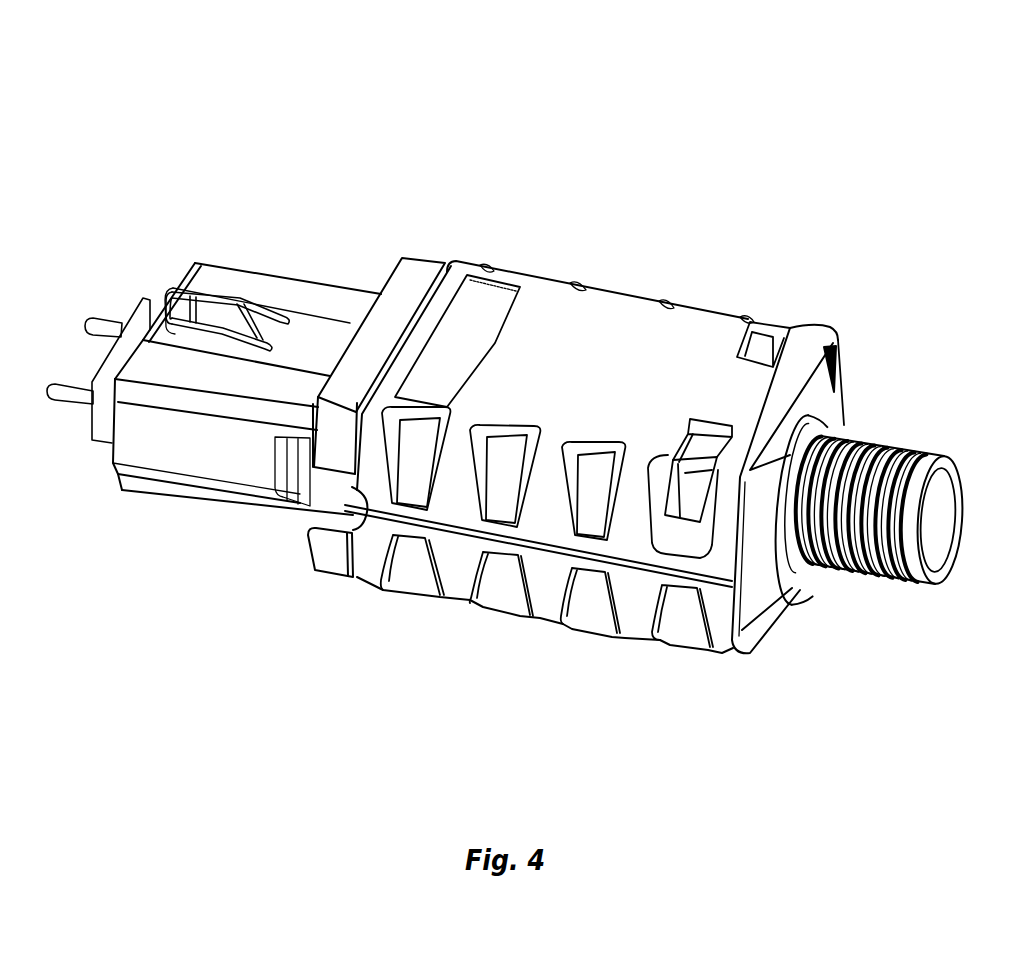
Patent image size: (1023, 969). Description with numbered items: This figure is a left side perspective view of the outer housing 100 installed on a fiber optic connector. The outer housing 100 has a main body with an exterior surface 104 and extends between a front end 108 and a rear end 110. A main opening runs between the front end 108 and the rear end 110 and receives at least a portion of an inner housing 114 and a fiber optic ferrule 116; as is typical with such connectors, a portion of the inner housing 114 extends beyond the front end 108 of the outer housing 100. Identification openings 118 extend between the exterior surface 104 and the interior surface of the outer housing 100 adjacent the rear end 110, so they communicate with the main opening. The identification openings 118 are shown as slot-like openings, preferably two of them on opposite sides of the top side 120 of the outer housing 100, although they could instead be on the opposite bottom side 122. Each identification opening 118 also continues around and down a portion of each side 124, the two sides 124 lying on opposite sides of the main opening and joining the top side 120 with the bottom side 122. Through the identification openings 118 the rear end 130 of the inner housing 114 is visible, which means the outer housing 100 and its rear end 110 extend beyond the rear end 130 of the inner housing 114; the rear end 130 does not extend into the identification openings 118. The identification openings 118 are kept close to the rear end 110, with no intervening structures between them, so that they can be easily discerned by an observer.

The outer housing 100 is at (643, 125).
The exterior surface 104 is at (637, 320).
The front end 108 is at (420, 260).
The rear end 110 is at (834, 350).
The inner housing 114 is at (250, 272).
The fiber optic ferrule 116 is at (140, 308).
The identification openings 118 is at (687, 420).
The top side 120 is at (549, 297).
The bottom side 122 is at (770, 620).
The sides 124 is at (455, 590).
The rear end of the inner housing 130 is at (633, 623).